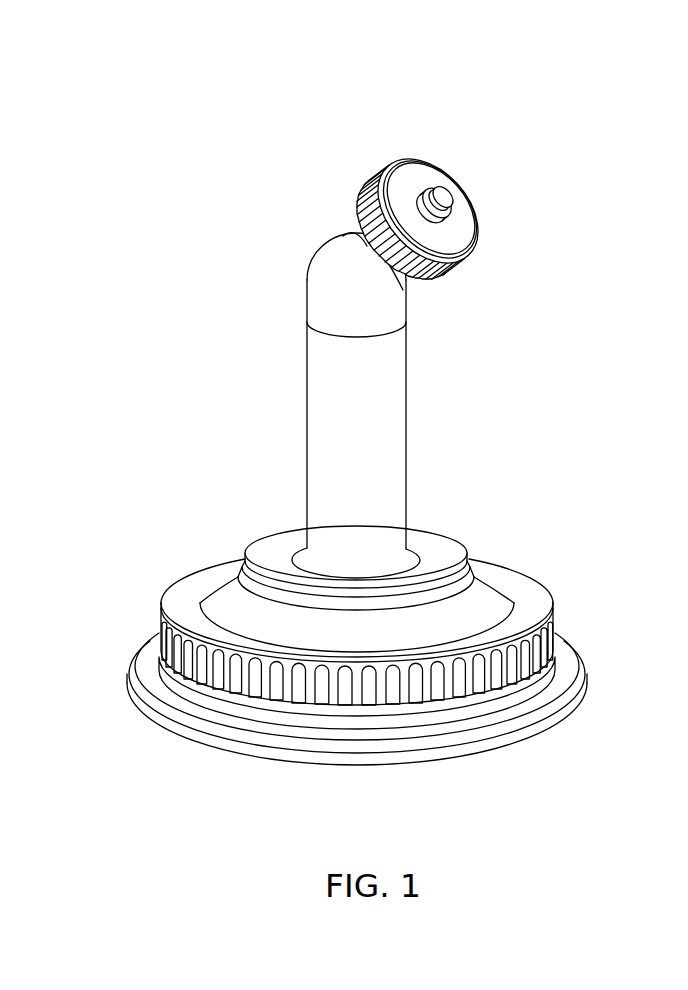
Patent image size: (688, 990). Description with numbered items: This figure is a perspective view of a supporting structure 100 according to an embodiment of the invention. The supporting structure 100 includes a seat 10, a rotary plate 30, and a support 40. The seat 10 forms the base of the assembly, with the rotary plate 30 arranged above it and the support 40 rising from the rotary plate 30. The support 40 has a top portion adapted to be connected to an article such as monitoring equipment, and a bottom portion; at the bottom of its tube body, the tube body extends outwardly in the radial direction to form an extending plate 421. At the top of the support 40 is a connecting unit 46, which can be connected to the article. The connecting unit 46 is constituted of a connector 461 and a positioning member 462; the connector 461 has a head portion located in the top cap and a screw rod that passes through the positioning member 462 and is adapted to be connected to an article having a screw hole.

The supporting structure 100 is at (156, 188).
The seat 10 is at (112, 662).
The rotary plate 30 is at (163, 573).
The support 40 is at (292, 428).
The extending plate 421 is at (438, 547).
The connecting unit 46 is at (402, 146).
The connector 461 is at (434, 153).
The positioning member 462 is at (362, 184).